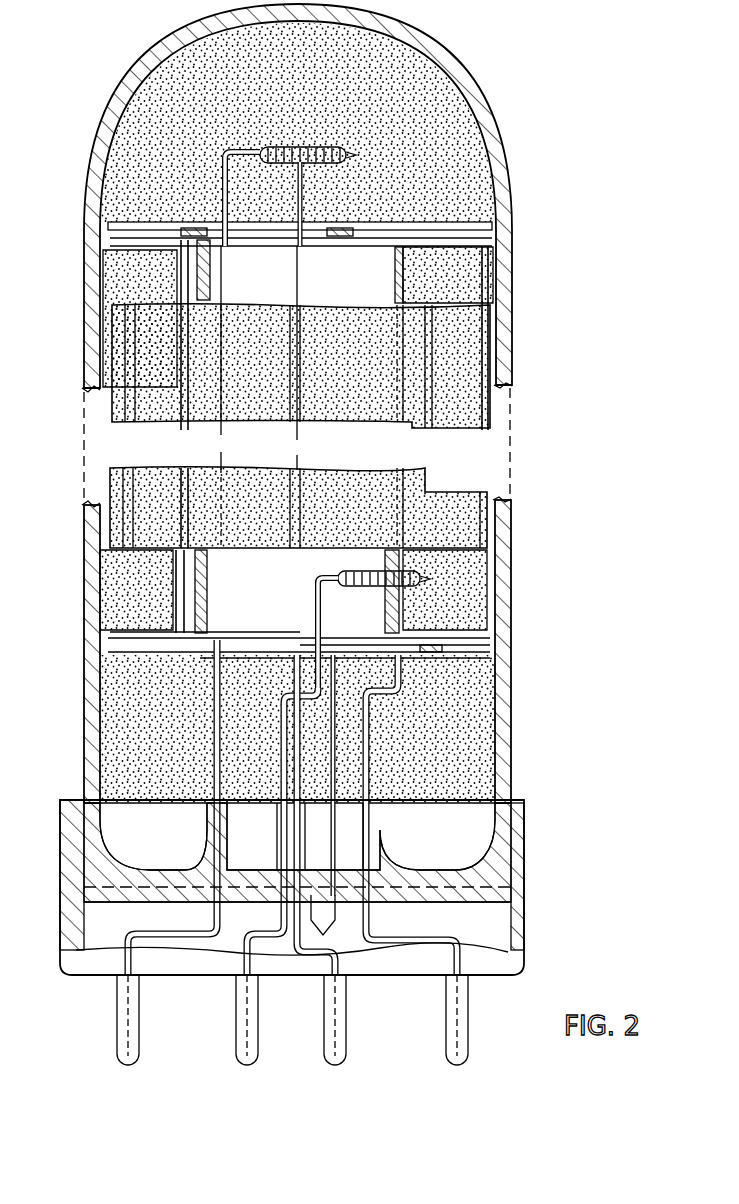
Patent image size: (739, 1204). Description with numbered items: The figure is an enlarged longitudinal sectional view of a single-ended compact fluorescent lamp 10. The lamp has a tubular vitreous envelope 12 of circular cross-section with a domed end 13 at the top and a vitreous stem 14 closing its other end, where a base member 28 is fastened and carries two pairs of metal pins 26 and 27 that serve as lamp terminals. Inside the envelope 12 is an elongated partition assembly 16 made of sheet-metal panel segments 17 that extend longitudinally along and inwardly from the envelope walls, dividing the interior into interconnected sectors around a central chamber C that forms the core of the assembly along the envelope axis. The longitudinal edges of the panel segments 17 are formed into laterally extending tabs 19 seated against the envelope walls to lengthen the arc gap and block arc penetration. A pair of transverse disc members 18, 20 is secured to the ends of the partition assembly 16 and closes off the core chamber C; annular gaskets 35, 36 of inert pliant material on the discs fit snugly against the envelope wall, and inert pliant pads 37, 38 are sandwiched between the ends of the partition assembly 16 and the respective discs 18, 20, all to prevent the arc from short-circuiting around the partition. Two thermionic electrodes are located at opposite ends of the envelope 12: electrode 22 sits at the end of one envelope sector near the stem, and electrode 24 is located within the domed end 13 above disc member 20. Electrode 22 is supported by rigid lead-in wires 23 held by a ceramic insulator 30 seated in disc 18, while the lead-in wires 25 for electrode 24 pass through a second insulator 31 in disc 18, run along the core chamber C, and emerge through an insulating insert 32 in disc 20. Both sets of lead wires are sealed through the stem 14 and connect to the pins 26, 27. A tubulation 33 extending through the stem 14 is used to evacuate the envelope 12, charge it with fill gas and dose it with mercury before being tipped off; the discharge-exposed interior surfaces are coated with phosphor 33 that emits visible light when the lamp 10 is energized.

The compact fluorescent lamp 10 is at (575, 382).
The vitreous envelope 12 is at (513, 373).
The domed end 13 is at (428, 44).
The vitreous stem 14 is at (380, 834).
The partition assembly 16 is at (405, 427).
The panel segments 17 is at (458, 344).
The disc member 18 is at (482, 661).
The tabs 19 is at (113, 405).
The disc member 20 is at (363, 237).
The thermionic electrode 22 is at (336, 578).
The lead-in wires 23 is at (300, 773).
The thermionic electrode 24 is at (300, 144).
The lead-in wires 25 is at (273, 200).
The metal pins 26 is at (452, 1060).
The metal pins 27 is at (232, 1062).
The base member 28 is at (520, 856).
The insulator 30 is at (361, 649).
The second insulator 31 is at (259, 650).
The insulating insert 32 is at (313, 228).
The tubulation 33 is at (450, 100).
The annular gasket 35 is at (462, 652).
The annular gasket 36 is at (463, 226).
The pad 37 is at (164, 637).
The pad 38 is at (410, 260).
The central chamber C is at (278, 284).